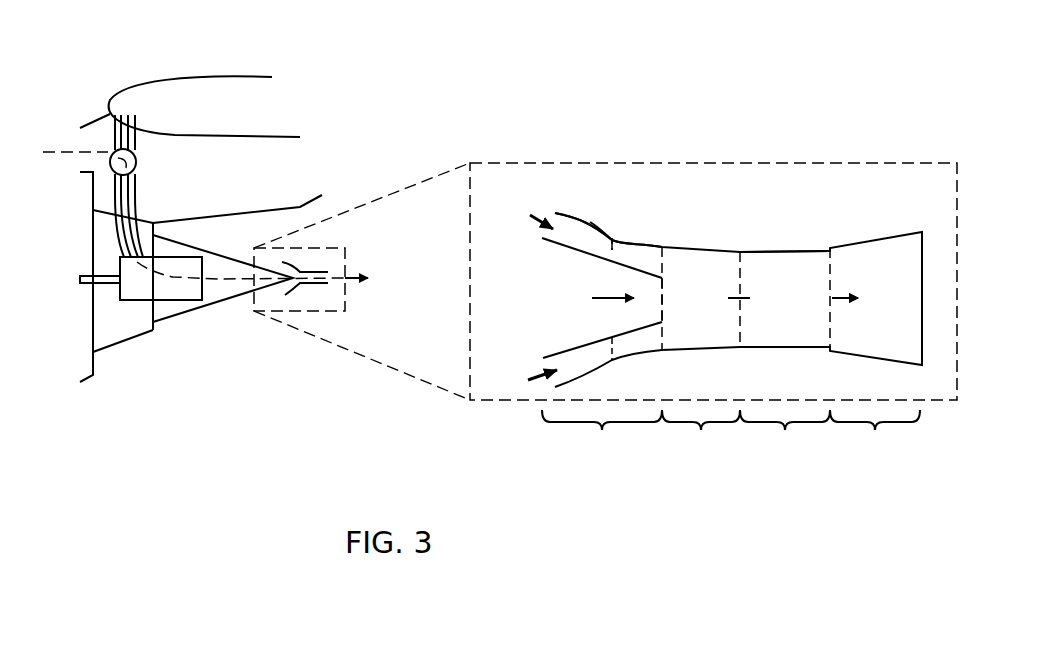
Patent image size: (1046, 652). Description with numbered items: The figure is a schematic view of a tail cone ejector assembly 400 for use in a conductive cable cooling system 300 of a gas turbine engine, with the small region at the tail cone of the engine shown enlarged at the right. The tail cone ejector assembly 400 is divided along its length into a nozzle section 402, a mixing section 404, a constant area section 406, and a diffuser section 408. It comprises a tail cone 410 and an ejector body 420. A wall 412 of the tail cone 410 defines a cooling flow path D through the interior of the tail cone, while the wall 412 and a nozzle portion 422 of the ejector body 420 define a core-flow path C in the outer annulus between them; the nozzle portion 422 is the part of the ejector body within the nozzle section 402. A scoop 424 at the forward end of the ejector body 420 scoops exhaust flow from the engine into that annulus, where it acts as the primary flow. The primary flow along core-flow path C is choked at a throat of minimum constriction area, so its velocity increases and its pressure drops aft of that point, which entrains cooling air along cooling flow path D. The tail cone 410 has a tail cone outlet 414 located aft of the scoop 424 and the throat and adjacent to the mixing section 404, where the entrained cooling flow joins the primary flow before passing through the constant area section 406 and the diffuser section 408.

The conductive cable cooling system 300 is at (160, 196).
The tail cone ejector assembly 400 is at (767, 186).
The nozzle section 402 is at (602, 438).
The mixing section 404 is at (701, 436).
The constant area section 406 is at (785, 438).
The diffuser section 408 is at (875, 438).
The tail cone 410 is at (585, 345).
The wall 412 is at (568, 248).
The tail cone outlet 414 is at (665, 295).
The ejector body 420 is at (762, 252).
The nozzle portion 422 is at (590, 224).
The scoop 424 is at (555, 213).
The core-flow path C is at (541, 285).
The cooling flow path D is at (604, 297).